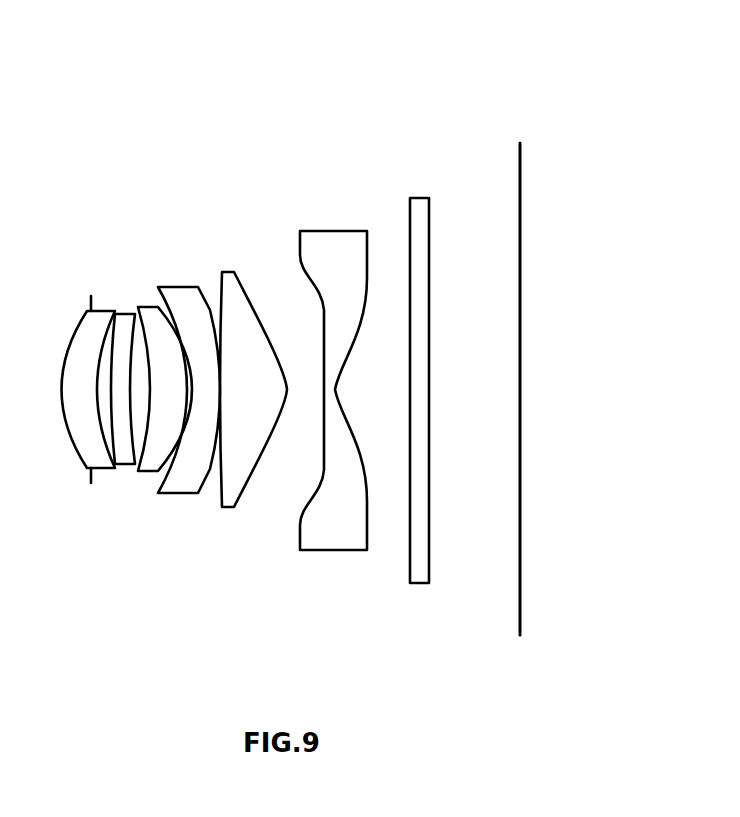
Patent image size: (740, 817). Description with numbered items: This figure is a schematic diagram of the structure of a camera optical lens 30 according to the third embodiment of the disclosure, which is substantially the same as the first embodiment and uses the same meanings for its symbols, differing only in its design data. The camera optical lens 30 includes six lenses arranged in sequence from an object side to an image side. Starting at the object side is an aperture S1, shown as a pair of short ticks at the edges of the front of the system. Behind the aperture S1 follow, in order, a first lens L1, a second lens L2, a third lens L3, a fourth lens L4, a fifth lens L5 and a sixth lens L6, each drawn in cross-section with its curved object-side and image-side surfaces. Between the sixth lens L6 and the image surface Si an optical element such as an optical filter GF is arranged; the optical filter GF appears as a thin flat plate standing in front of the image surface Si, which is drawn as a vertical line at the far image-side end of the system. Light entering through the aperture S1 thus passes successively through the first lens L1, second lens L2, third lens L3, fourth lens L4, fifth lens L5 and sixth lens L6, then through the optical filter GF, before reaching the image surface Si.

The camera optical lens 30 is at (295, 42).
The aperture S1 is at (72, 383).
The first lens L1 is at (89, 372).
The second lens L2 is at (123, 375).
The third lens L3 is at (162, 369).
The fourth lens L4 is at (189, 380).
The fifth lens L5 is at (253, 379).
The sixth lens L6 is at (333, 380).
The optical filter GF is at (417, 377).
The image surface Si is at (516, 378).